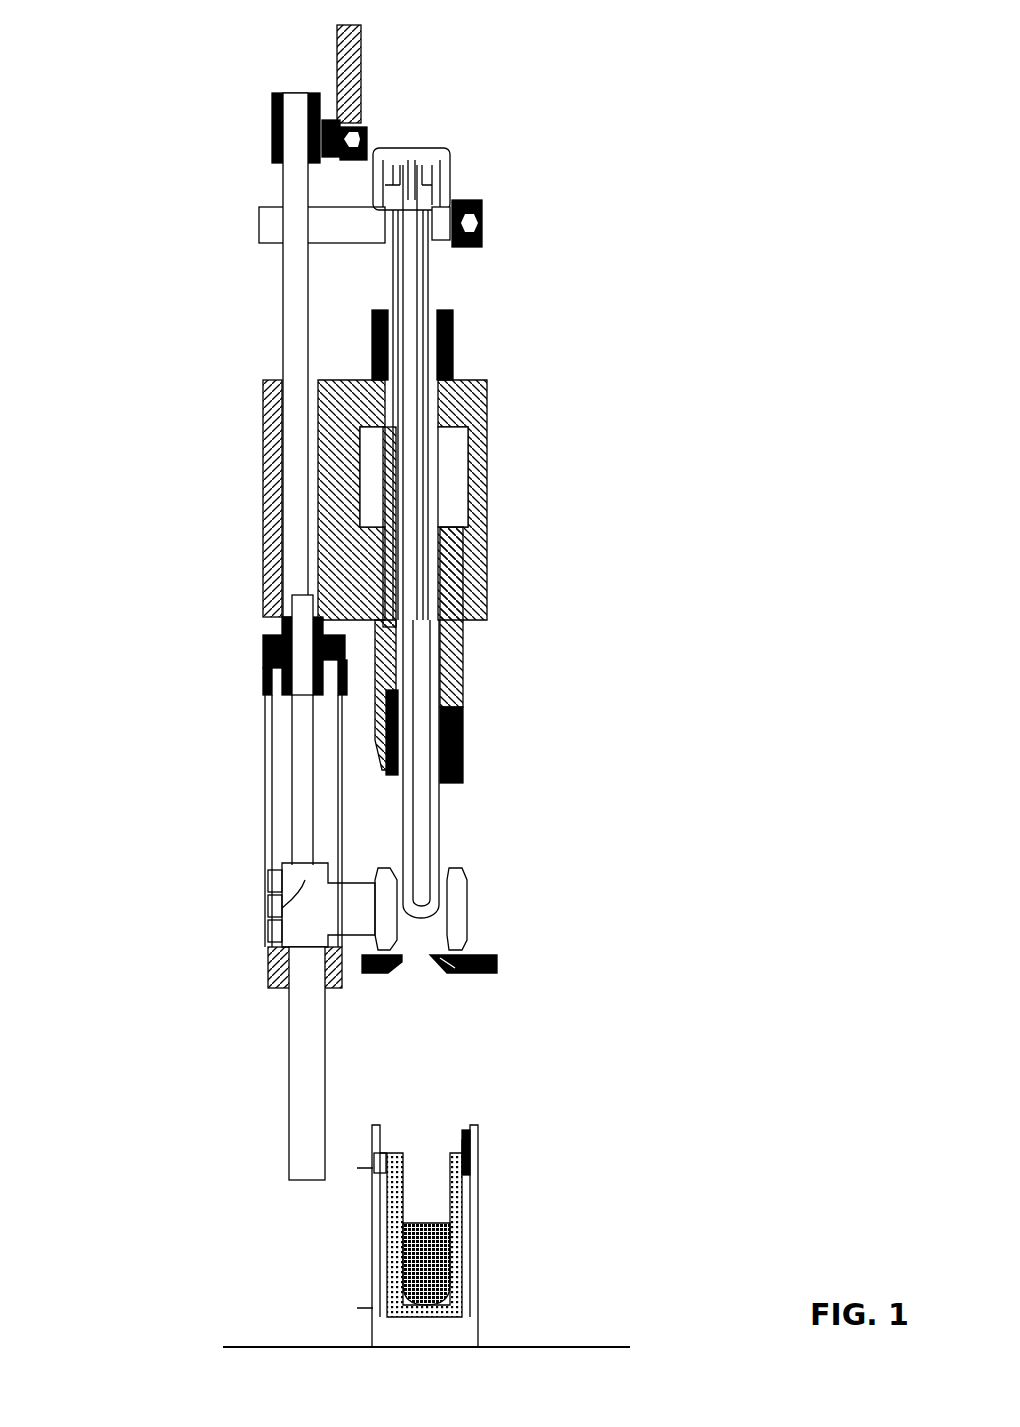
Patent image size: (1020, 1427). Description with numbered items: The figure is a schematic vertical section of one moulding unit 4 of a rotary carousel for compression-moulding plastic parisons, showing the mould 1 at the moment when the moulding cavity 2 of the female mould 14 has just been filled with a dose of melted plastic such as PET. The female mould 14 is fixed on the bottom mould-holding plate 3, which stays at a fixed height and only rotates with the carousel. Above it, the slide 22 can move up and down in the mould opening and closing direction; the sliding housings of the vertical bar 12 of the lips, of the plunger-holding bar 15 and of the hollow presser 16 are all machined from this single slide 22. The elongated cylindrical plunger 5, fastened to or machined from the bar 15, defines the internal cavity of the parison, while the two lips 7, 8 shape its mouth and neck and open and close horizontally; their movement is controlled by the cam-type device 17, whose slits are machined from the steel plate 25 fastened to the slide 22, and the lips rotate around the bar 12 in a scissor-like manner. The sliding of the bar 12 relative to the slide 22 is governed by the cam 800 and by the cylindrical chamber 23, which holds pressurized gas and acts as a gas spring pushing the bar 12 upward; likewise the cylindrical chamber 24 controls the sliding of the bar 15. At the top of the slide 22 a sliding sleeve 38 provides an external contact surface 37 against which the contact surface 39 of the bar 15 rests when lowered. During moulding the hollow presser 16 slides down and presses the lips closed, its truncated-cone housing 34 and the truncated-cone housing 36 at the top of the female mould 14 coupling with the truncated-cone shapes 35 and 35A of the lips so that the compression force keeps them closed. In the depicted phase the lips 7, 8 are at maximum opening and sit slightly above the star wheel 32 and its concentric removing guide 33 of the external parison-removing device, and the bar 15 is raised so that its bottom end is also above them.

The mould 1 is at (720, 1333).
The moulding cavity 2 is at (425, 1145).
The bottom mould-holding plate 3 is at (547, 1347).
The moulding unit 4 is at (700, 550).
The plunger 5 is at (440, 845).
The completion element (lip) 7 is at (268, 908).
The completion element (lip) 8 is at (285, 948).
The vertical bar 12 is at (289, 1088).
The female mould 14 is at (470, 1215).
The plunger-holding bar 15 is at (397, 282).
The hollow presser (compression cylinder) 16 is at (463, 658).
The cam-type device 17 is at (178, 948).
The slide 22 is at (485, 412).
The cylindrical chamber 23 is at (268, 648).
The cylindrical chamber 24 is at (452, 497).
The plate 25 is at (265, 765).
The star wheel 32 is at (472, 975).
The removing guide 33 is at (375, 975).
The truncated-cone housing 34 is at (440, 790).
The truncated cone 35 is at (380, 880).
The truncated cone 35A is at (456, 938).
The truncated-cone housing 36 is at (400, 1140).
The external contact surface 37 is at (443, 312).
The sliding sleeve 38 is at (455, 358).
The contact surface 39 is at (443, 248).
The cam 800 is at (336, 45).